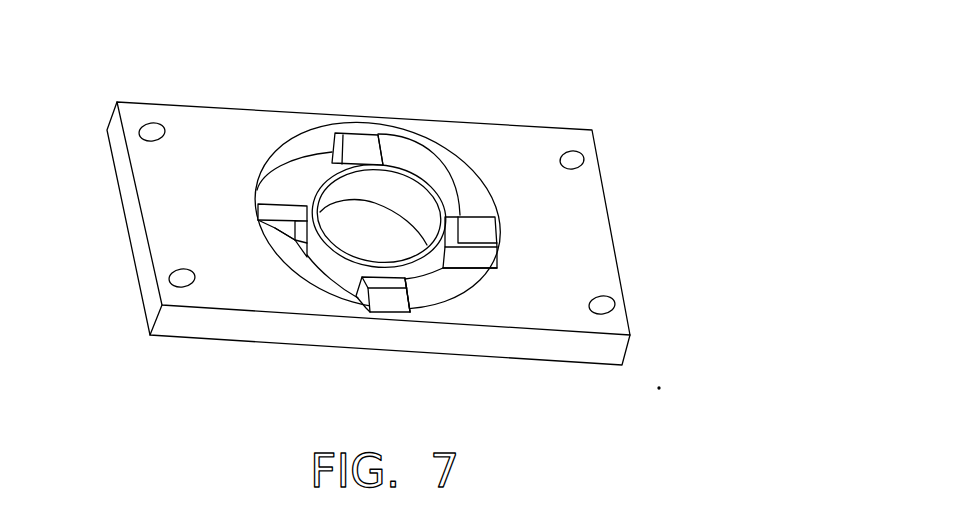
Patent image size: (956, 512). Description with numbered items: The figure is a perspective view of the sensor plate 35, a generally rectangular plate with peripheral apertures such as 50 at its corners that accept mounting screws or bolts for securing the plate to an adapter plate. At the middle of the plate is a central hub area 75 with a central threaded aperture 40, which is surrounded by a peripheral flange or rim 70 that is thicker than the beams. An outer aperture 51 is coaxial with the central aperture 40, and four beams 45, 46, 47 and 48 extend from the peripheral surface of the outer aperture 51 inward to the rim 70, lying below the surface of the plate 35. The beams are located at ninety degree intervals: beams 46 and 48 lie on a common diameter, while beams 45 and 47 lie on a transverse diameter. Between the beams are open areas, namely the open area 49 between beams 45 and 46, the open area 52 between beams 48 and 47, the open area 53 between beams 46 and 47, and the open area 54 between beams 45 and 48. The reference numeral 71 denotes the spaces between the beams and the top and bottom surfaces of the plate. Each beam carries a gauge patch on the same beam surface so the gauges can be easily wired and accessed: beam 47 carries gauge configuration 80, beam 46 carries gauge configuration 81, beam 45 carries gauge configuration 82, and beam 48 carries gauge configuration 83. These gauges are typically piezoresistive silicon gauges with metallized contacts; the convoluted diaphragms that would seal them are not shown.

The sensor plate 35 is at (577, 203).
The central threaded aperture 40 is at (390, 228).
The beam 45 is at (360, 142).
The beam 46 is at (477, 233).
The beam 47 is at (410, 313).
The beam 48 is at (275, 232).
The open area 49 is at (445, 200).
The peripheral aperture 50 is at (575, 160).
The outer aperture 51 is at (478, 275).
The open area 52 is at (358, 300).
The open area 53 is at (433, 300).
The open area 54 is at (295, 170).
The peripheral flange or rim 70 is at (427, 252).
The spaces d and dl 71 is at (334, 136).
The central hub area 75 is at (256, 210).
The gauge configuration 80 is at (388, 290).
The gauge configuration 81 is at (488, 256).
The gauge configuration 82 is at (388, 138).
The gauge configuration 83 is at (307, 256).